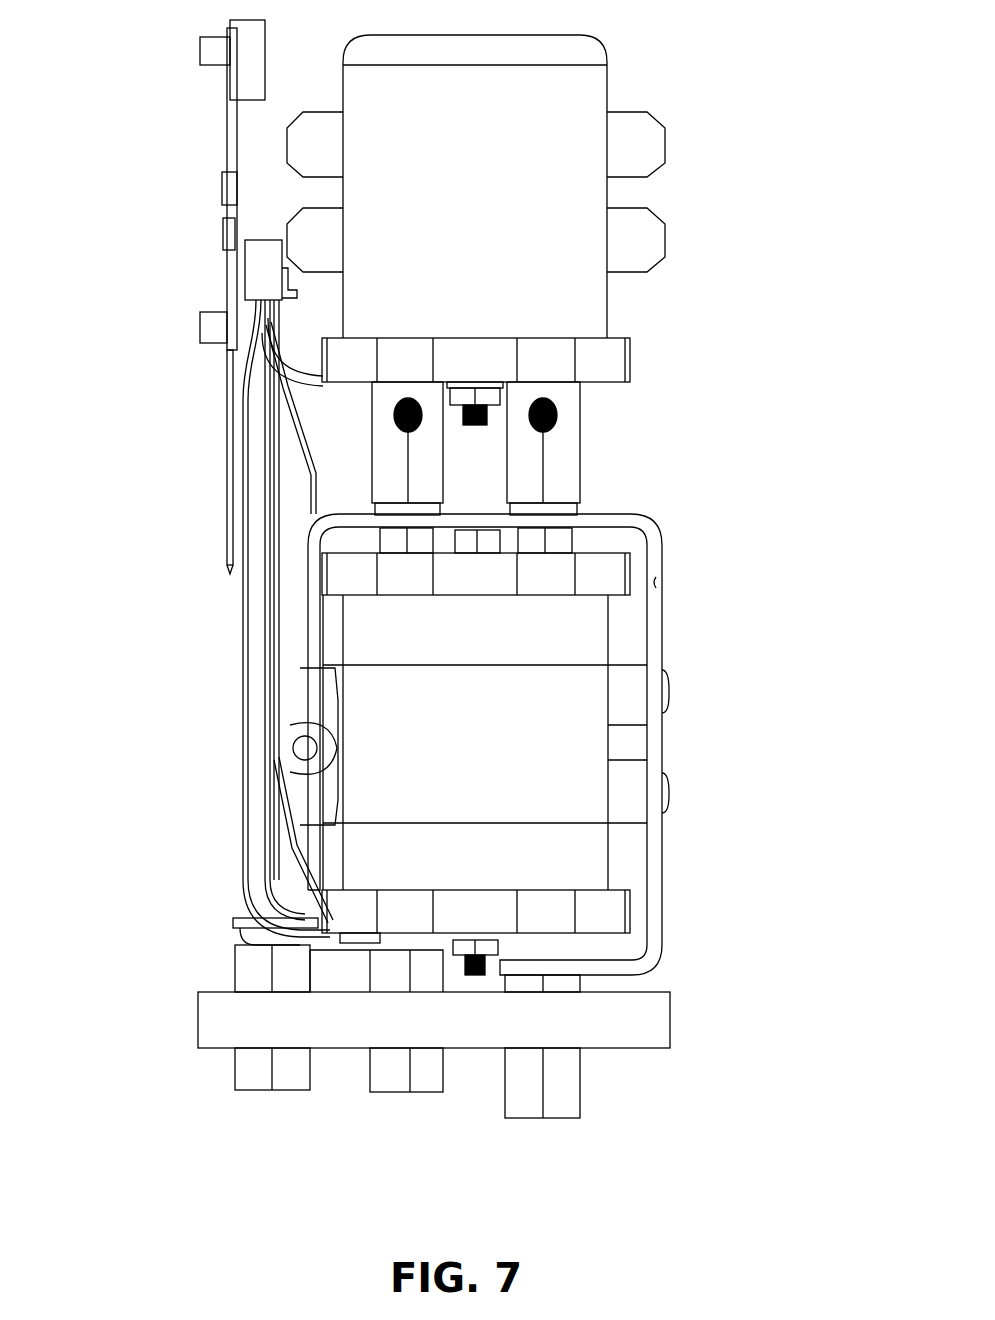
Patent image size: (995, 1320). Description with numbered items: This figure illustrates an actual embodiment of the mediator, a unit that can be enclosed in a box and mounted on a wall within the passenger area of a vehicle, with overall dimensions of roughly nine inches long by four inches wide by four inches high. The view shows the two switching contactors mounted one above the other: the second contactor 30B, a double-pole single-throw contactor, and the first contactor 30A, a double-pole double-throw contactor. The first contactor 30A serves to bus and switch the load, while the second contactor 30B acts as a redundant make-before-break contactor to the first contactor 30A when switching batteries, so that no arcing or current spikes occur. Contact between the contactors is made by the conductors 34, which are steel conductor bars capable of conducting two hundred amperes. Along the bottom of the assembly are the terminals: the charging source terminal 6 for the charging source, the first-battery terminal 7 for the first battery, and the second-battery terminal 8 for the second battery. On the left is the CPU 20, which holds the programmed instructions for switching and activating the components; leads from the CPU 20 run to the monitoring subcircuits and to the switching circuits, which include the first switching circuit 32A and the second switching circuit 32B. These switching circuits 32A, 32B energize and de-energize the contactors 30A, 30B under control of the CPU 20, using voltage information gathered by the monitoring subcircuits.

The CPU 20 is at (230, 135).
The second contactor 30B is at (583, 85).
The first contactor 30A is at (592, 845).
The second switching circuit 32B is at (323, 387).
The first switching circuit 32A is at (255, 932).
The conductors 34 is at (660, 590).
The second-battery terminal 8 is at (252, 1073).
The first-battery terminal 7 is at (387, 1083).
The charging source terminal 6 is at (560, 1107).